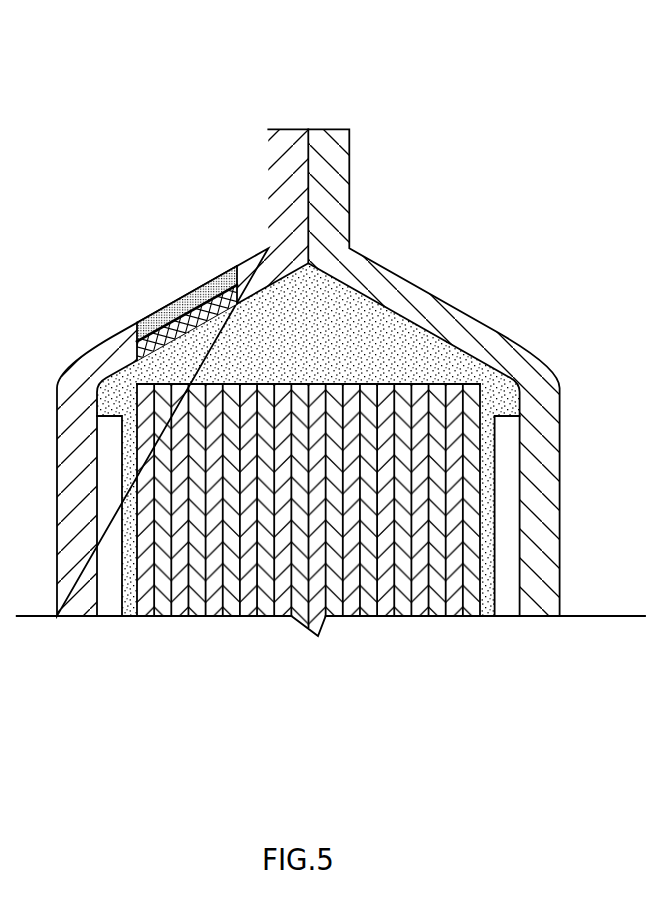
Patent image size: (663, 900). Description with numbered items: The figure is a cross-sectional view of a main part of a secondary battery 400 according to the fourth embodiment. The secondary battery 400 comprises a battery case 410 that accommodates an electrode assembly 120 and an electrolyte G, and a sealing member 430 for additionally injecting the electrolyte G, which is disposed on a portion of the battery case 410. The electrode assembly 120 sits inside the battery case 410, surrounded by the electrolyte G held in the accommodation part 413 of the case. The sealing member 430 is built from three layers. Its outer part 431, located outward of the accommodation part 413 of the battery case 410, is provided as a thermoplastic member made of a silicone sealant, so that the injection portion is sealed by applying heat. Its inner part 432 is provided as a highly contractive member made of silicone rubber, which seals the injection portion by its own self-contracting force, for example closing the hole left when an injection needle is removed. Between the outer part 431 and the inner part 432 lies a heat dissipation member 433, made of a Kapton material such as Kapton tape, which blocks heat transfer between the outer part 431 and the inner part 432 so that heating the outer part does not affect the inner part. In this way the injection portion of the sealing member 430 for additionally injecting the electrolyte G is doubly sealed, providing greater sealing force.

The secondary battery 400 is at (572, 44).
The battery case 410 is at (474, 303).
The accommodation part 413 is at (368, 332).
The electrolyte G is at (420, 352).
The electrode assembly 120 is at (236, 644).
The sealing member 430 is at (190, 288).
The outer part 431 is at (182, 306).
The inner part 432 is at (219, 290).
The heat dissipation member 433 is at (190, 320).